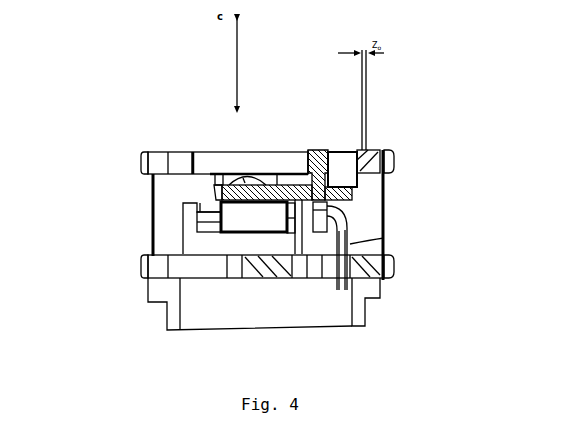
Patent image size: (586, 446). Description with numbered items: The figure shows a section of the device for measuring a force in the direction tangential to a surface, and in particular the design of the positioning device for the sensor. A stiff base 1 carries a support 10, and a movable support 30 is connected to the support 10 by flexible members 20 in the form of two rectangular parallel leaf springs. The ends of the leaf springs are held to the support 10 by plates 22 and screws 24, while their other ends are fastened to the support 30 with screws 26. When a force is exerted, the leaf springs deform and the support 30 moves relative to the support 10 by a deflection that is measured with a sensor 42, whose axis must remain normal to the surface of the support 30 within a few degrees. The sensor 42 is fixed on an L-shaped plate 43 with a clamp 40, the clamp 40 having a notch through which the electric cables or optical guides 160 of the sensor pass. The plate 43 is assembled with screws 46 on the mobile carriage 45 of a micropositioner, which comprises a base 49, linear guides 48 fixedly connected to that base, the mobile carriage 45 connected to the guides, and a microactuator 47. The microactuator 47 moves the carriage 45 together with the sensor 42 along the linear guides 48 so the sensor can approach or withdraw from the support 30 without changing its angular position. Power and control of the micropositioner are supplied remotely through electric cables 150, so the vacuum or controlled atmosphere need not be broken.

The stiff base 1 is at (175, 315).
The support 10 is at (371, 265).
The flexible members 20 is at (153, 197).
The plates 22 is at (390, 272).
The screws 24 is at (395, 267).
The screws 26 is at (395, 164).
The support 30 is at (160, 160).
The clamp 40 is at (384, 188).
The sensor 42 is at (358, 148).
The L-shaped plate 43 is at (319, 150).
The mobile carriage 45 is at (233, 222).
The screws 46 is at (236, 178).
The microactuator 47 is at (214, 176).
The linear guides 48 is at (205, 218).
The base of the micropositioner 49 is at (188, 227).
The electric cables 150 is at (384, 238).
The signal transmission means 160 is at (341, 284).